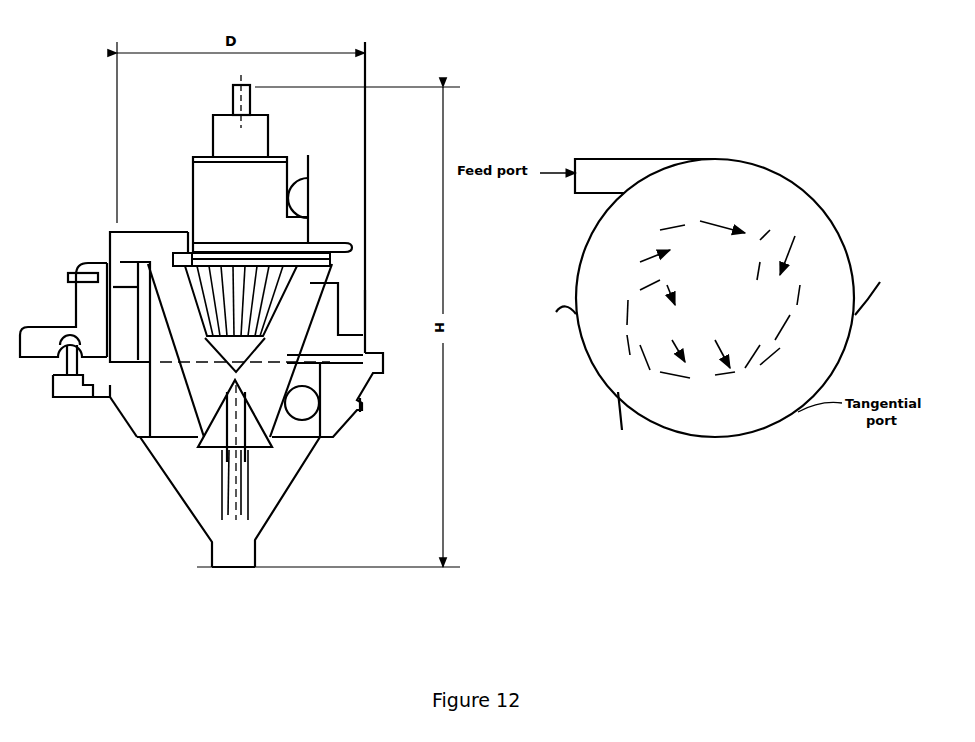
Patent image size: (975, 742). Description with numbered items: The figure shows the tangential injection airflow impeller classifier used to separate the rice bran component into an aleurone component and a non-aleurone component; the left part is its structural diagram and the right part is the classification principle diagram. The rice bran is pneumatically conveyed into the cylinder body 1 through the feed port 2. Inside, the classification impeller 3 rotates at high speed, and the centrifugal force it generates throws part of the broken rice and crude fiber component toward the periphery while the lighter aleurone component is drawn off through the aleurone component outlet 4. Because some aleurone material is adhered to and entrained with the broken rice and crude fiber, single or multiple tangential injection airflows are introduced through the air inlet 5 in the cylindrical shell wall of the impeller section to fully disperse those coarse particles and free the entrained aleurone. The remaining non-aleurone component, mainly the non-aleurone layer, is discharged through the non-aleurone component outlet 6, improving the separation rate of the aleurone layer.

The cylinder body 1 is at (167, 337).
The feed port 2 is at (56, 275).
The classification impeller 3 is at (188, 253).
The aleurone component outlet 4 is at (398, 190).
The air inlet 5 is at (366, 300).
The non-aleurone component outlet 6 is at (230, 575).